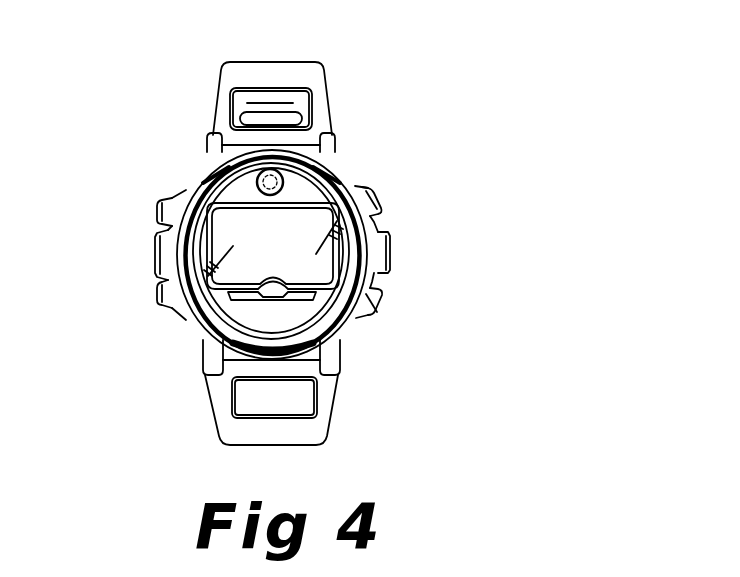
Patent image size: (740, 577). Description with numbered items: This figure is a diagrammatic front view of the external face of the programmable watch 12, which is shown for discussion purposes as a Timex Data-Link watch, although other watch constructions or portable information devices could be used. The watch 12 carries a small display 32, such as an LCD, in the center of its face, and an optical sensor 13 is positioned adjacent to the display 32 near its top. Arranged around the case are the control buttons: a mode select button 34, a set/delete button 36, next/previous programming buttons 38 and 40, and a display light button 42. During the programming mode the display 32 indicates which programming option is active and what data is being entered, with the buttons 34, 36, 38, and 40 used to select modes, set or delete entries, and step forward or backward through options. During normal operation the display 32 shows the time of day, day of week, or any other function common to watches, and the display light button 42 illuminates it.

The programmable watch 12 is at (449, 94).
The optical sensor 13 is at (284, 181).
The display 32 is at (265, 217).
The mode select button 34 is at (391, 255).
The set/delete button 36 is at (384, 307).
The next/previous programming button 38 is at (380, 204).
The next/previous programming button 40 is at (160, 299).
The display light button 42 is at (162, 211).